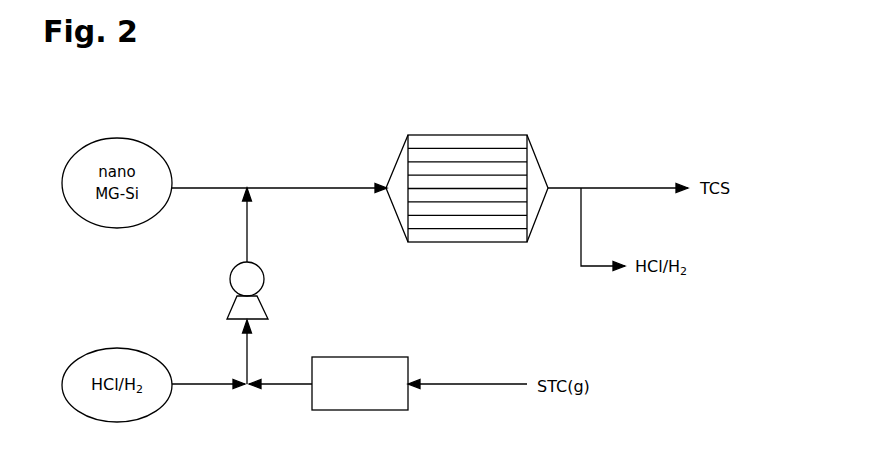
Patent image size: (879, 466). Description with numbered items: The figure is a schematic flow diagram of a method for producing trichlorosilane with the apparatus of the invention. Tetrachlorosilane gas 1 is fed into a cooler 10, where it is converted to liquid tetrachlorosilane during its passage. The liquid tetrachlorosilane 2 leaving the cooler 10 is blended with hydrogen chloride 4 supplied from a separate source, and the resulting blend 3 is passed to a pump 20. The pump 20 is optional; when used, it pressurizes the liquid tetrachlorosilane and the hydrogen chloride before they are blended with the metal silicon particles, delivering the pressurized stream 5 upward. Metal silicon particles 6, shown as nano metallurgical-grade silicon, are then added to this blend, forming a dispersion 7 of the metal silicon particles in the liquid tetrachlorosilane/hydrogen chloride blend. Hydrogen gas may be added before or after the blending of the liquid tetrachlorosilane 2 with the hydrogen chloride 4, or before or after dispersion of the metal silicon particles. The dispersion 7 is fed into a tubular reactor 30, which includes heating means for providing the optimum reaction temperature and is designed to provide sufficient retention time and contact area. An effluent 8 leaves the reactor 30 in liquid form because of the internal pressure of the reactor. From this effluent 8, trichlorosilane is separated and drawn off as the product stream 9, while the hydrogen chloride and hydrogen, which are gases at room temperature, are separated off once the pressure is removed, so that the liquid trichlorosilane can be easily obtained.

The tetrachlorosilane gas 1 is at (467, 374).
The liquid tetrachlorosilane 2 is at (280, 372).
The mixed gas stream to pump 3 is at (241, 352).
The hydrogen chloride 4 is at (208, 372).
The pumped gas stream 5 is at (240, 225).
The metal silicon particles 6 is at (209, 175).
The dispersion 7 is at (317, 177).
The effluent 8 is at (564, 176).
The TCS product stream 9 is at (634, 179).
The cooler 10 is at (358, 357).
The pump 20 is at (229, 281).
The tubular reactor 30 is at (472, 135).